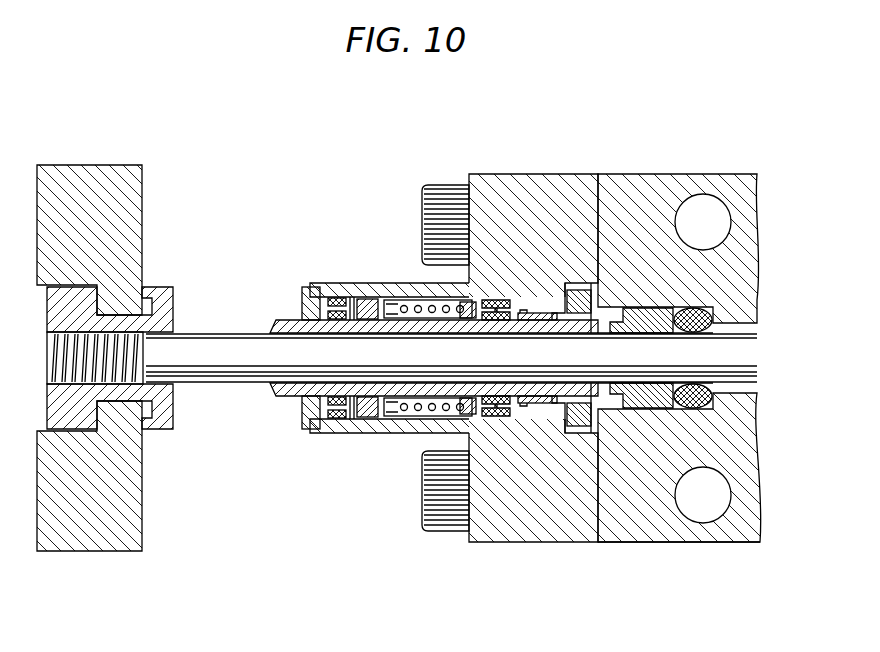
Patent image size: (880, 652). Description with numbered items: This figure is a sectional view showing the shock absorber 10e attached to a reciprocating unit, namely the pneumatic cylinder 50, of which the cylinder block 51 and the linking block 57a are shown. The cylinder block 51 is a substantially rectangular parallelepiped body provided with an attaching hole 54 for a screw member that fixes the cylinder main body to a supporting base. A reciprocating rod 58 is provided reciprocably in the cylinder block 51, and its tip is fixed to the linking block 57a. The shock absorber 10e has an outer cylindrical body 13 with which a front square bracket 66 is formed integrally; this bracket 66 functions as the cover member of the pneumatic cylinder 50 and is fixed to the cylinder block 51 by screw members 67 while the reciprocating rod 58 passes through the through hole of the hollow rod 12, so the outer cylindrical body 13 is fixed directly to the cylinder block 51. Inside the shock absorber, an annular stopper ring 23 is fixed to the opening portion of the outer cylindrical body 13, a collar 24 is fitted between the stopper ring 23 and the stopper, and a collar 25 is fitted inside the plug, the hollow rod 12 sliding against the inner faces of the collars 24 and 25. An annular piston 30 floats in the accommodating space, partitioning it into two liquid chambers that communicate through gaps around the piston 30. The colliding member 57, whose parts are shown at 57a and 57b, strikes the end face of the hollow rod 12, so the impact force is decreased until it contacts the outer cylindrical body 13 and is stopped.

The shock absorber 10e is at (511, 166).
The pneumatic cylinder 50 is at (738, 166).
The cylinder block 51 is at (640, 535).
The attaching hole 54 is at (705, 222).
The reciprocating rod 58 is at (740, 357).
The screw members 67 is at (440, 190).
The stopper ring 23 is at (577, 300).
The collar 24 is at (540, 413).
The bracket 66 is at (583, 540).
The outer cylindrical body 13 is at (355, 283).
The annular piston 30 is at (365, 415).
The collar 25 is at (300, 305).
The hollow rod 12 is at (287, 395).
The colliding member 57 is at (120, 558).
The linking block 57a is at (98, 550).
The clamp ring 57b is at (160, 430).